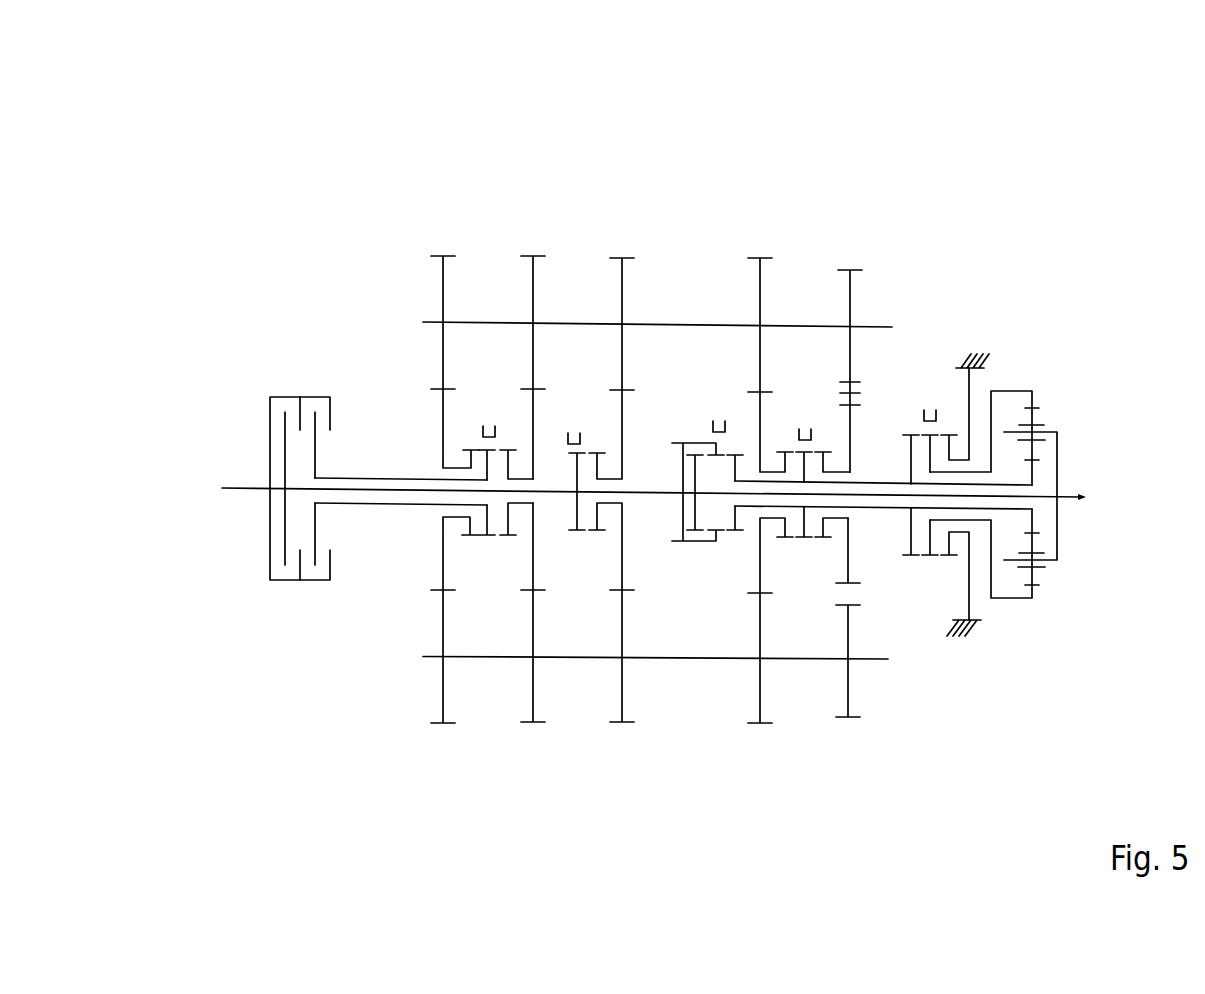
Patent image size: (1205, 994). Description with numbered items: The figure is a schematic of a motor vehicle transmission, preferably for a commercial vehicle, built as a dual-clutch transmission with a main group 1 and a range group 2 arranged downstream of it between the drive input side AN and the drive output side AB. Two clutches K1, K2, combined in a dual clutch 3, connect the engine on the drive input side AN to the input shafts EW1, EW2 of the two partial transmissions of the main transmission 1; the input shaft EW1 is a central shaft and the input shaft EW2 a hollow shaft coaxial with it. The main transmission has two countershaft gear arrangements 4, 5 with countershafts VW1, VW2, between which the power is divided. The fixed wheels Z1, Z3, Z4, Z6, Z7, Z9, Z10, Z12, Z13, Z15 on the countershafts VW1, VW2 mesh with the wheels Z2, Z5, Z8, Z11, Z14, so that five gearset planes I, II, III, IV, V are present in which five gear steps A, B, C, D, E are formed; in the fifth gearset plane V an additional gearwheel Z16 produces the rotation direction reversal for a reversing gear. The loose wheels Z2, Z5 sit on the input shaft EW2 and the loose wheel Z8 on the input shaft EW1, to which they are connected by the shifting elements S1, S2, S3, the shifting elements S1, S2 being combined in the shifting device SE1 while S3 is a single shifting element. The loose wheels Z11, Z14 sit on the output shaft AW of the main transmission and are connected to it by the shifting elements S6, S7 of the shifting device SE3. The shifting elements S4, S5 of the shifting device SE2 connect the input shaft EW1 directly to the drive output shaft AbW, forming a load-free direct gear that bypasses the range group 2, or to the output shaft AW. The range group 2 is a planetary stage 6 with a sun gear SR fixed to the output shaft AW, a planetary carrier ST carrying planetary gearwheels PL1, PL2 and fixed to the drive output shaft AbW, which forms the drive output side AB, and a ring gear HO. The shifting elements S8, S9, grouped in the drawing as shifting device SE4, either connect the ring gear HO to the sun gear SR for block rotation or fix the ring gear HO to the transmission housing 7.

The main group 1 is at (633, 160).
The range group 2 is at (1034, 218).
The dual clutch 3 is at (302, 621).
The countershaft gear arrangement 4 is at (719, 201).
The countershaft gear arrangement 5 is at (682, 760).
The planetary stage 6 is at (1028, 638).
The housing 7 is at (985, 351).
The clutch K1 is at (282, 388).
The clutch K2 is at (312, 385).
The input shaft EW1 is at (373, 503).
The input shaft EW2 is at (357, 477).
The drive input side AN is at (205, 488).
The drive output side AB is at (1134, 497).
The output shaft AW is at (890, 510).
The drive output shaft AbW is at (1043, 497).
The countershaft VW1 is at (880, 325).
The countershaft VW2 is at (868, 663).
The fixed wheel Z1 is at (443, 297).
The loose wheel Z2 is at (440, 423).
The fixed wheel Z3 is at (440, 688).
The fixed wheel Z4 is at (533, 307).
The loose wheel Z5 is at (531, 553).
The fixed wheel Z6 is at (531, 686).
The fixed wheel Z7 is at (620, 305).
The loose wheel Z8 is at (620, 553).
The fixed wheel Z9 is at (620, 687).
The fixed wheel Z10 is at (761, 300).
The loose wheel Z11 is at (763, 563).
The fixed wheel Z12 is at (757, 692).
The fixed wheel Z13 is at (852, 293).
The loose wheel Z14 is at (848, 557).
The fixed wheel Z15 is at (845, 694).
The additional gearwheel Z16 is at (853, 400).
The shifting device SE1 is at (487, 400).
The shifting device SE2 is at (715, 397).
The shifting device SE3 is at (805, 400).
The fourth shift element SE4 is at (932, 399).
The shifting element S1 is at (478, 478).
The shifting element S2 is at (515, 478).
The shifting element S3 is at (585, 478).
The shifting element S4 is at (696, 472).
The shifting element S5 is at (735, 472).
The shifting element S6 is at (795, 479).
The shifting element S7 is at (832, 479).
The shifting element S8 is at (911, 479).
The shifting element S9 is at (954, 494).
The ring gear HO is at (1010, 388).
The sun gear SR is at (1033, 470).
The planetary gearwheel PL1 is at (1040, 413).
The planetary gearwheel PL2 is at (1037, 573).
The planetary carrier ST is at (1060, 552).
The gearset plane I is at (443, 245).
The gearset plane II is at (533, 245).
The gearset plane III is at (622, 247).
The gearset plane IV is at (760, 248).
The gearset plane V is at (850, 252).
The gear step A is at (443, 738).
The gear step B is at (533, 738).
The gear step C is at (622, 738).
The gear step D is at (759, 738).
The gear step E is at (848, 738).